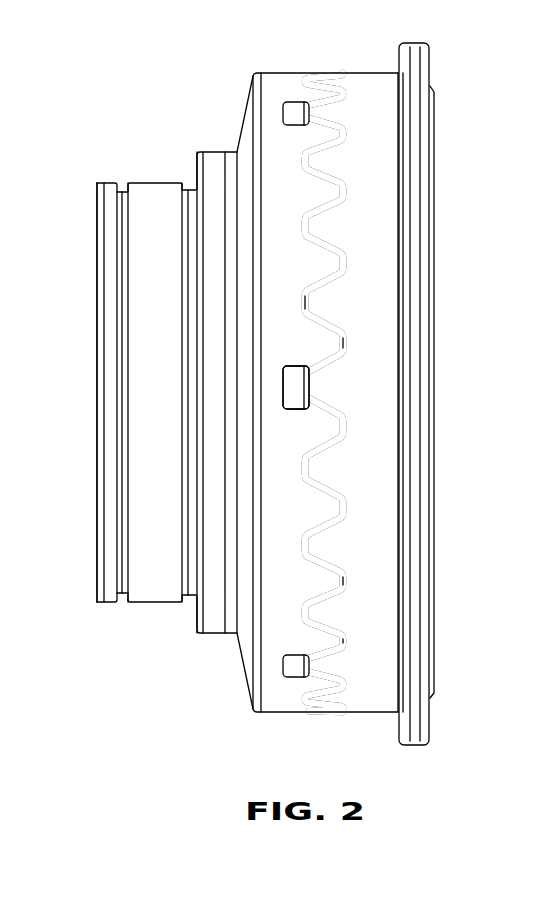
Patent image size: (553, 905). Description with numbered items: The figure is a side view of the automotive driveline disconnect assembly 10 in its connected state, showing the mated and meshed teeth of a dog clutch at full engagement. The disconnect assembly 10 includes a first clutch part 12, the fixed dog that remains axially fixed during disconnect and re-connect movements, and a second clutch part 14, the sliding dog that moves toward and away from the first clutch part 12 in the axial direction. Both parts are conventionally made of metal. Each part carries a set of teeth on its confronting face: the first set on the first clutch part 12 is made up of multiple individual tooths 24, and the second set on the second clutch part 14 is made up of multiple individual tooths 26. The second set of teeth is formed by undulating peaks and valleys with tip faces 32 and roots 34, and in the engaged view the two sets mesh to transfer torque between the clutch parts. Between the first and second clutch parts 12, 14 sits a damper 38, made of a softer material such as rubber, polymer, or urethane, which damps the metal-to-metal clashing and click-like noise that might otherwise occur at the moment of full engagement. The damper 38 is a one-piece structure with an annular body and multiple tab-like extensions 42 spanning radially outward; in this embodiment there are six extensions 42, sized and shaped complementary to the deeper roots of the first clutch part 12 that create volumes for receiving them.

The disconnect assembly 10 is at (120, 138).
The first clutch part 12 is at (241, 124).
The second clutch part 14 is at (436, 117).
The tooths 24 is at (325, 585).
The tooths 26 is at (323, 613).
The tip faces 32 is at (313, 305).
The roots 34 is at (342, 347).
The damper 38 is at (283, 383).
The tab-like extensions 42 is at (293, 112).